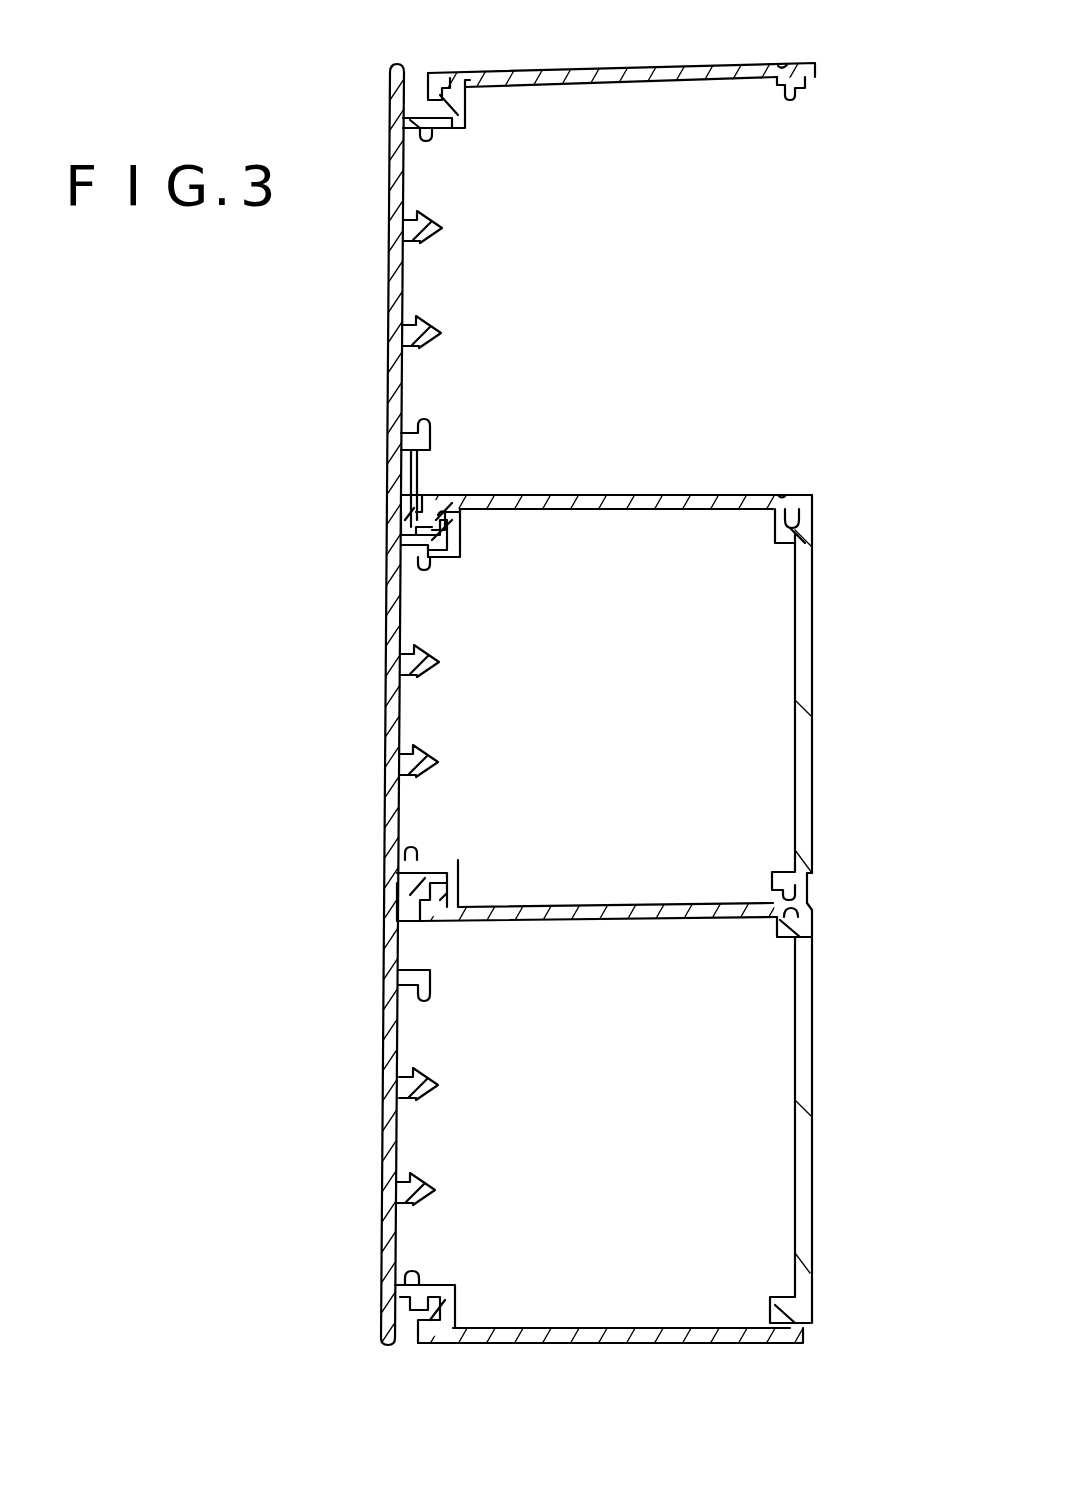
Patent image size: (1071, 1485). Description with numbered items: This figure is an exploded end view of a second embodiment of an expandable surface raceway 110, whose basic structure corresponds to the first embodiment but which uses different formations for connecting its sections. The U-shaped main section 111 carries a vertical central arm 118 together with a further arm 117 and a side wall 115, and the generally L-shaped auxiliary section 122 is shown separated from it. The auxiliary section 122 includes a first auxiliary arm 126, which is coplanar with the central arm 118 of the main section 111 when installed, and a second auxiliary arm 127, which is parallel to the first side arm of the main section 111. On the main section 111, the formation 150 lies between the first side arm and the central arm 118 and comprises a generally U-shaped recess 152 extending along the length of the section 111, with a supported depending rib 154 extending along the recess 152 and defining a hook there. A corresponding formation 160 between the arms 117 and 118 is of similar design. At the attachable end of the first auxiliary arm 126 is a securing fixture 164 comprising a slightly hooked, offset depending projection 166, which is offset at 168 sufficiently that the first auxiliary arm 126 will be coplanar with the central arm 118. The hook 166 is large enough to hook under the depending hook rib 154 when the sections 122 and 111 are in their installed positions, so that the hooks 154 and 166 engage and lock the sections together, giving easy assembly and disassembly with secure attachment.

The expandable raceway 110 is at (680, 440).
The main section 111 is at (615, 815).
The right side wall 115 is at (746, 909).
The arm 117 is at (622, 906).
The central arm 118 is at (398, 823).
The auxiliary section 122 is at (742, 52).
The first auxiliary arm 126 is at (405, 176).
The second auxiliary arm 127 is at (568, 83).
The formation 150 is at (617, 538).
The U-shaped recess 152 is at (400, 525).
The depending rib 154 is at (418, 528).
The formation 160 is at (465, 855).
The securing fixture 164 is at (412, 495).
The depending projection 166 is at (402, 545).
The offset 168 is at (402, 498).